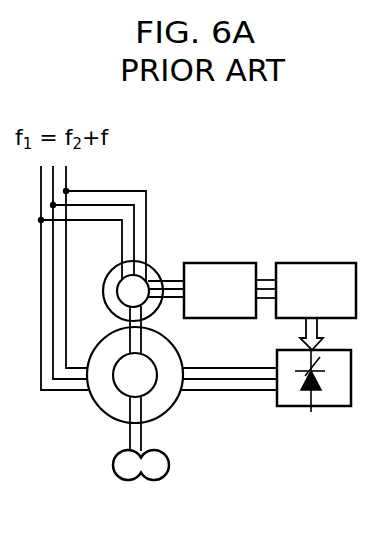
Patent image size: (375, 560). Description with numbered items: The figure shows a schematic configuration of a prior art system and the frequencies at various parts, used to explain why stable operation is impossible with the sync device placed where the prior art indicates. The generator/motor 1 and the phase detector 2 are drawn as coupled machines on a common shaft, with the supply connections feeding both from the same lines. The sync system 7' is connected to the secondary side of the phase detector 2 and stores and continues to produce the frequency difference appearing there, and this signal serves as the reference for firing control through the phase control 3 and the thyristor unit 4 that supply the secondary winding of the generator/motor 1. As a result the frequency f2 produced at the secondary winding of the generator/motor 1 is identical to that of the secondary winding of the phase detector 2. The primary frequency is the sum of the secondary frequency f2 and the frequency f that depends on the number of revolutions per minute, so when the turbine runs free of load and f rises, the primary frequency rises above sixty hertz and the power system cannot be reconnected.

The generator/motor 1 is at (143, 387).
The phase detector 2 is at (140, 300).
The phase control 3 is at (309, 263).
The thyristor switch 4 is at (311, 412).
The sync system 7' is at (220, 267).
The frequency dependent on the number of r.p.m. f is at (144, 483).
The frequency of the secondary winding of the generator/motor f2 is at (233, 391).